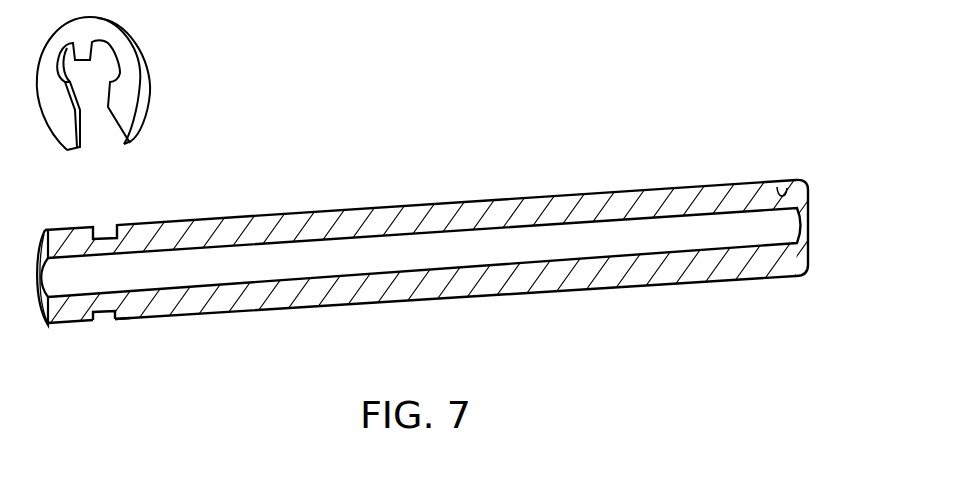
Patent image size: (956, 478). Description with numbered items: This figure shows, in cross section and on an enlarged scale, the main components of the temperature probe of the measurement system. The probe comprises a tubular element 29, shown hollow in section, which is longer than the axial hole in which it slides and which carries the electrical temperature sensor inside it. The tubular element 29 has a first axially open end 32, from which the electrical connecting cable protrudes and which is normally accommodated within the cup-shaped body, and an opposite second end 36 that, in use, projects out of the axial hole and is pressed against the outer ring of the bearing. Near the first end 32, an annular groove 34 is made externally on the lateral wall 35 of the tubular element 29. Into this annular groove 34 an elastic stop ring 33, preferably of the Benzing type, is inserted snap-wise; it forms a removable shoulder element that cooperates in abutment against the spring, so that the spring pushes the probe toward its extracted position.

The tubular element 29 is at (627, 281).
The first axially open end 32 is at (62, 330).
The elastic stop ring 33 is at (166, 82).
The annular groove 34 is at (108, 332).
The lateral wall 35 is at (461, 195).
The second end 36 is at (787, 186).